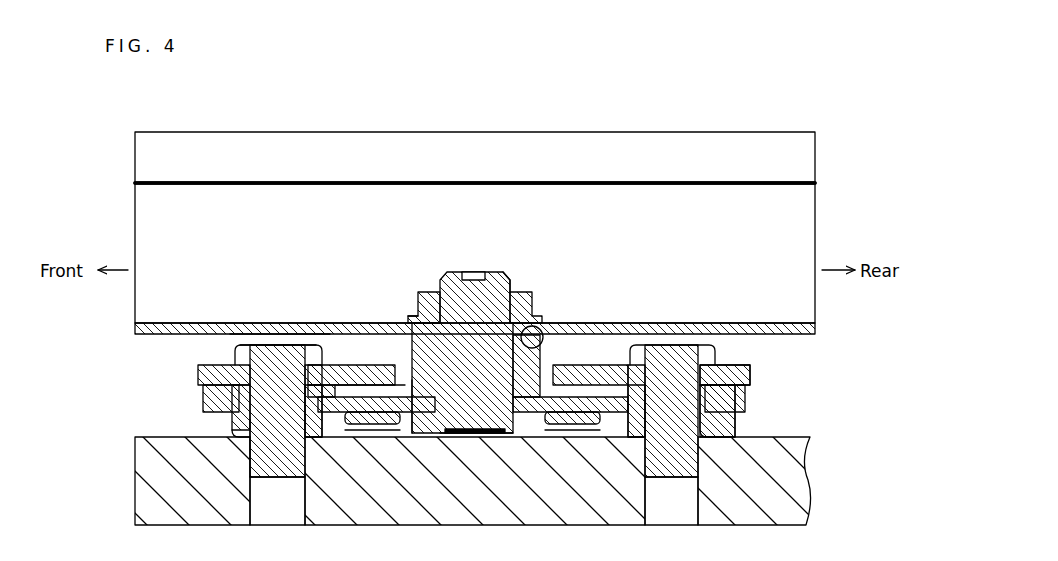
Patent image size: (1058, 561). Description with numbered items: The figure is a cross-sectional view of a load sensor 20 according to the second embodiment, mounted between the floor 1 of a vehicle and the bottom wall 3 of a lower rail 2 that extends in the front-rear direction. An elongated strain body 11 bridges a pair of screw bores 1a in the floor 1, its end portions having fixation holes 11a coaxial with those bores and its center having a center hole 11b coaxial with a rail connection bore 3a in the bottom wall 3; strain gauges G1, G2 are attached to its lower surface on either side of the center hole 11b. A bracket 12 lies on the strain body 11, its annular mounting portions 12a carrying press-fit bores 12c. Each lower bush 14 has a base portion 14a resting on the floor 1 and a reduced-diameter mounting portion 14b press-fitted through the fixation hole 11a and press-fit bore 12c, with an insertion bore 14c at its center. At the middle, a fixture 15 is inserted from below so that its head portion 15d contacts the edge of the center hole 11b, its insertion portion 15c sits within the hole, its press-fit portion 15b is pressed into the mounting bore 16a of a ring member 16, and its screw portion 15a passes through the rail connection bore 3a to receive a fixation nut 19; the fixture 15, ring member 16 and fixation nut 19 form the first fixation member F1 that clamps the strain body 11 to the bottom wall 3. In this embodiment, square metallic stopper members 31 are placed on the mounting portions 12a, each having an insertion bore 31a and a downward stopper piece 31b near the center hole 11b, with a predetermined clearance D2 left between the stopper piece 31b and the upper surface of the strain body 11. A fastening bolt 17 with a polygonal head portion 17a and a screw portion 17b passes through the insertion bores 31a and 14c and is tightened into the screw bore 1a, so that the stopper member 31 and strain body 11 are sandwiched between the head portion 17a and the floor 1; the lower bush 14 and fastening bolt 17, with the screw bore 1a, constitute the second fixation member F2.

The floor 1 is at (810, 434).
The screw bore 1a is at (305, 503).
The lower rail 2 is at (766, 127).
The bottom wall 3 is at (800, 334).
The rail connection bore 3a is at (514, 294).
The strain body 11 is at (748, 405).
The fixation hole 11a is at (333, 364).
The center hole 11b is at (505, 437).
The bracket 12 is at (752, 380).
The mounting portion 12a is at (198, 376).
The press-fit bore 12c is at (307, 368).
The lower bush 14 is at (238, 440).
The base portion 14a is at (232, 418).
The mounting portion 14b is at (205, 400).
The insertion bore 14c is at (304, 418).
The fixture 15 is at (455, 272).
The screw portion 15a is at (428, 300).
The press-fit portion 15b is at (412, 322).
The insertion portion 15c is at (415, 437).
The head portion 15d is at (470, 436).
The ring member 16 is at (538, 322).
The mounting bore 16a is at (540, 370).
The fastening bolt 17 is at (298, 343).
The head portion 17a is at (232, 344).
The screw portion 17b is at (250, 455).
The fixation nut 19 is at (536, 326).
The load sensor 20 is at (133, 374).
The stopper member 31 is at (212, 330).
The insertion bore 31a is at (256, 330).
The stopper piece 31b is at (365, 426).
The clearance D2 is at (398, 392).
The strain gauge G1 is at (382, 428).
The strain gauge G2 is at (560, 428).
The first fixation member F1 is at (487, 262).
The second fixation member F2 is at (170, 312).